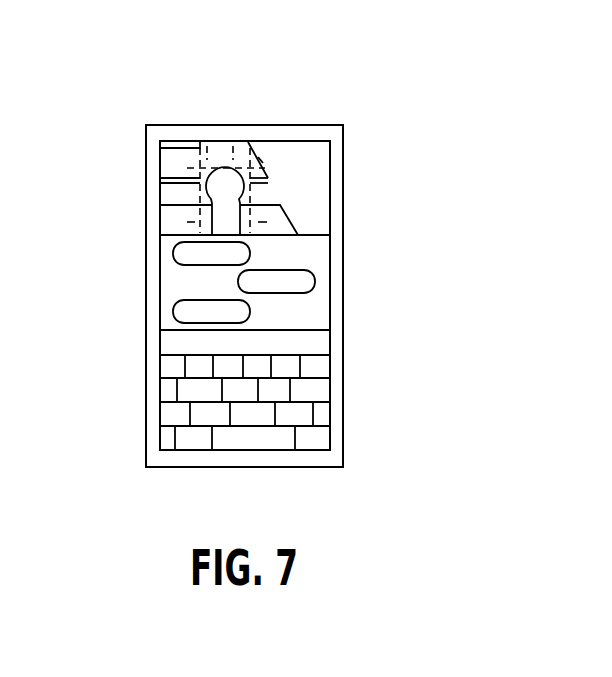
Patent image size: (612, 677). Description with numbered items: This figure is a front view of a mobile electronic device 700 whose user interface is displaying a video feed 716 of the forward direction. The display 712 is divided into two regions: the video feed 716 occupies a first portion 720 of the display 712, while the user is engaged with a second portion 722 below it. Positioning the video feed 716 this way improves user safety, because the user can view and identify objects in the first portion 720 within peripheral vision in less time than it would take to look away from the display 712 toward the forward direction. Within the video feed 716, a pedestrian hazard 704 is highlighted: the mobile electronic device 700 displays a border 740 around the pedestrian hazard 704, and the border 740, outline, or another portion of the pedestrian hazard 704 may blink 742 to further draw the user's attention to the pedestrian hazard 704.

The mobile electronic device 700 is at (269, 258).
The display 712 is at (348, 168).
The video feed 716 is at (287, 152).
The first portion 720 is at (248, 152).
The second portion 722 is at (315, 255).
The pedestrian hazard 704 is at (223, 187).
The border 740 is at (190, 193).
The blink 742 is at (195, 158).